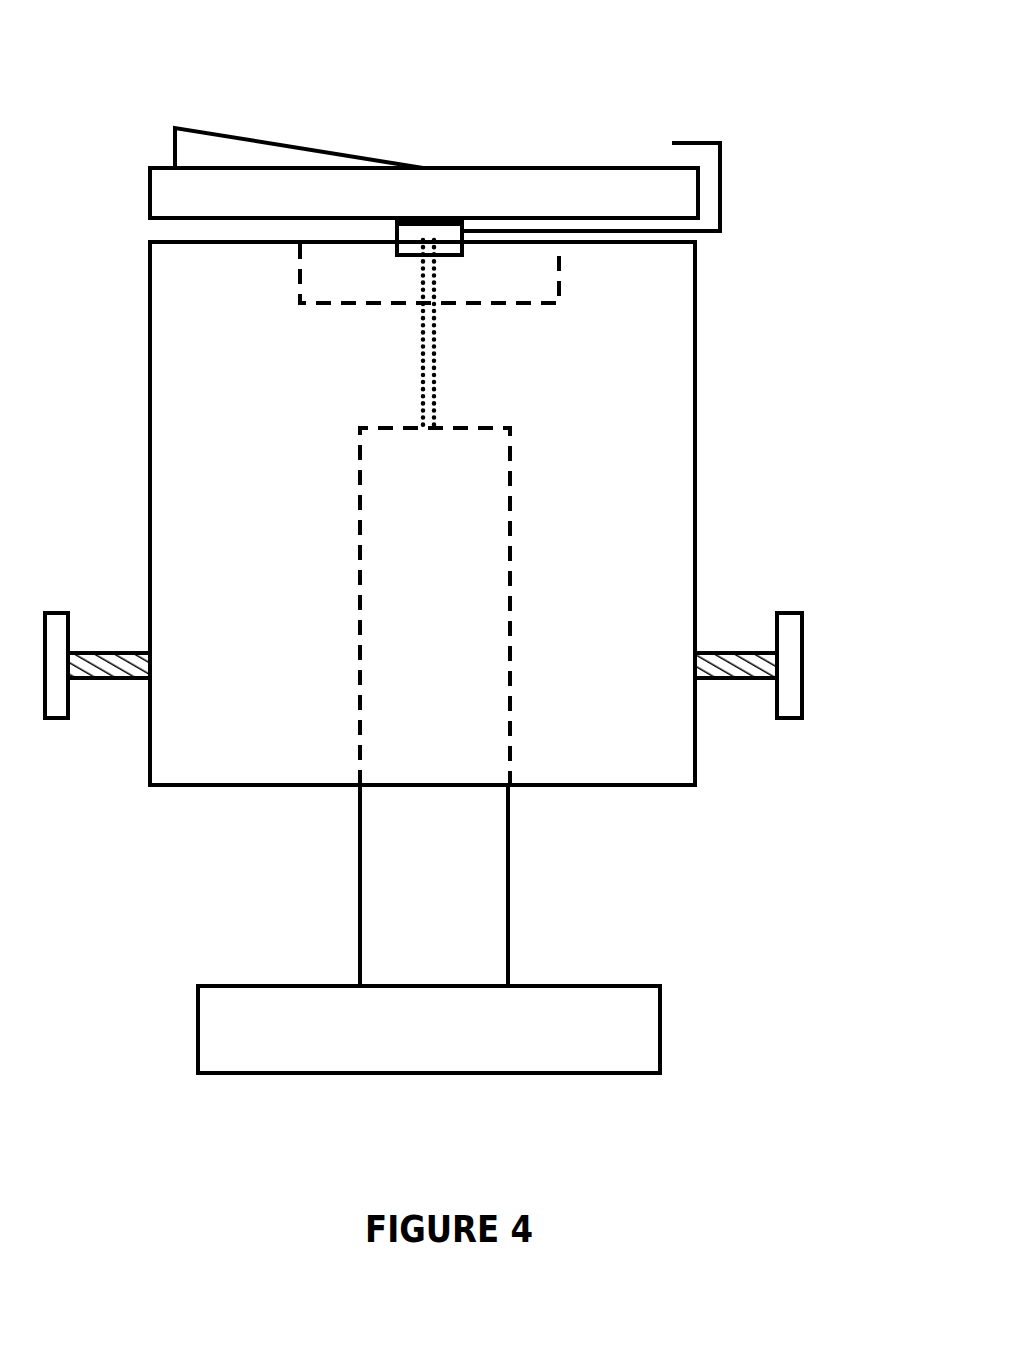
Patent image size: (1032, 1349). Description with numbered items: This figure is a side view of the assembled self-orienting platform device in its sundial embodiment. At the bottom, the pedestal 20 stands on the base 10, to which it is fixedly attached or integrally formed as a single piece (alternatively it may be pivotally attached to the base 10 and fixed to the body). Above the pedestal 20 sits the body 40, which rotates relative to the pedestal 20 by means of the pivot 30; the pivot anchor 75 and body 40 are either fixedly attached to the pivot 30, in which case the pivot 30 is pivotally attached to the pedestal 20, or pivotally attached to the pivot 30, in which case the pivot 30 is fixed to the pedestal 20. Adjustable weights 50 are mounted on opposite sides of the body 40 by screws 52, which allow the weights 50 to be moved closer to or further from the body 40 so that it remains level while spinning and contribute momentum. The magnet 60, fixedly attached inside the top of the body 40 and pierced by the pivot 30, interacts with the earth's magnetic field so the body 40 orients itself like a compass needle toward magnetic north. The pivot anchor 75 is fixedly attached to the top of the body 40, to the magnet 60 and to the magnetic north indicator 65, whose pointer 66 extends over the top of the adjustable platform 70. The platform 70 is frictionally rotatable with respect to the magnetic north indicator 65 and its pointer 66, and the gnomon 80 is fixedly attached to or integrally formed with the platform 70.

The base 10 is at (630, 1040).
The pedestal 20 is at (480, 680).
The pivot 30 is at (420, 371).
The body 40 is at (685, 473).
The adjustable weights 50 is at (51, 725).
The screws 52 is at (115, 653).
The magnet 60 is at (517, 280).
The magnetic north indicator 65 is at (722, 197).
The pointer 66 is at (683, 135).
The adjustable platform 70 is at (172, 203).
The pivot anchor 75 is at (445, 240).
The gnomon 80 is at (225, 157).